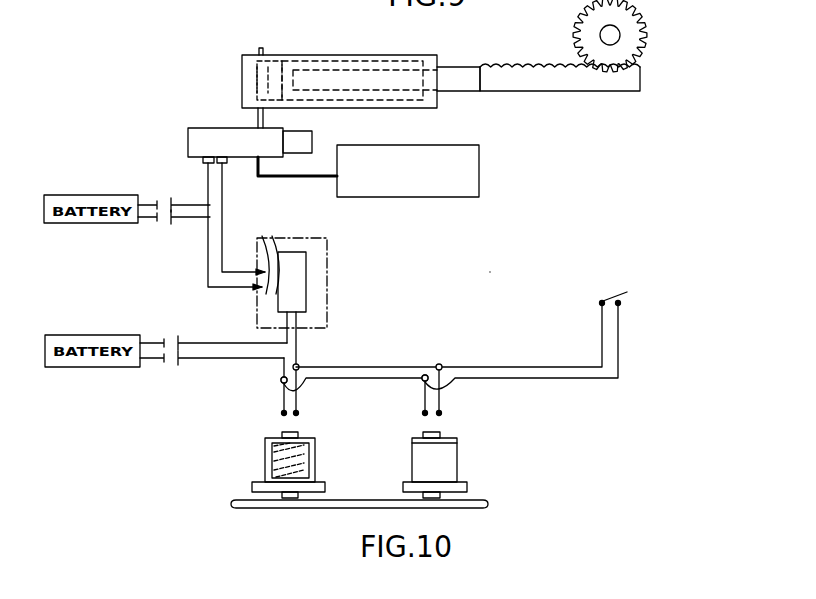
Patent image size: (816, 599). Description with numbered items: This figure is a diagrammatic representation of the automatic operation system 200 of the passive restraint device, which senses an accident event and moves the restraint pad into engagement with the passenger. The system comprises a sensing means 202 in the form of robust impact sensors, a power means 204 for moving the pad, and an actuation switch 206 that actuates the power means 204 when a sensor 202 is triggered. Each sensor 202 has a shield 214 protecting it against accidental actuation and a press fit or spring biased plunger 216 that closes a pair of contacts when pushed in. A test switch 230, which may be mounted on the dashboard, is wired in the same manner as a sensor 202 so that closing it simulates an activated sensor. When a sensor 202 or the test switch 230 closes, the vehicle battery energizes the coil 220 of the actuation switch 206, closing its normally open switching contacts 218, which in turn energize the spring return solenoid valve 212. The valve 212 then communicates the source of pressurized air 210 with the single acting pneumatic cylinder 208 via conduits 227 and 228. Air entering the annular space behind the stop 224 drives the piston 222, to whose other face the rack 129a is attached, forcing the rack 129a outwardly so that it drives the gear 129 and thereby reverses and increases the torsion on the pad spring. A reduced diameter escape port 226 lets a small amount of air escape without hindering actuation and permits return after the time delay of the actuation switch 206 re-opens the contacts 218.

The gear 129 is at (632, 33).
The rack 129a is at (640, 77).
The automatic operation system 200 is at (490, 272).
The sensing means 202 is at (265, 470).
The power means 204 is at (242, 102).
The actuation switch 206 is at (318, 268).
The pneumatic cylinder 208 is at (386, 56).
The source of pressurized air 210 is at (440, 145).
The solenoid valve 212 is at (188, 140).
The shield 214 is at (469, 506).
The plunger 216 is at (288, 430).
The switching contacts 218 is at (272, 228).
The coil 220 is at (297, 262).
The piston 222 is at (284, 69).
The stop 224 is at (257, 80).
The escape port 226 is at (258, 50).
The conduit 227 is at (318, 173).
The conduit 228 is at (256, 113).
The test switch 230 is at (613, 293).